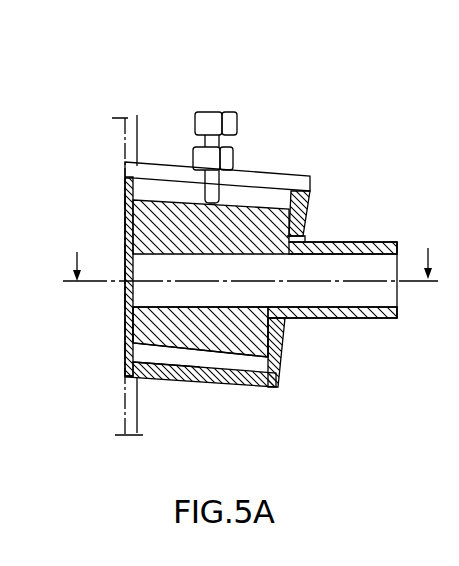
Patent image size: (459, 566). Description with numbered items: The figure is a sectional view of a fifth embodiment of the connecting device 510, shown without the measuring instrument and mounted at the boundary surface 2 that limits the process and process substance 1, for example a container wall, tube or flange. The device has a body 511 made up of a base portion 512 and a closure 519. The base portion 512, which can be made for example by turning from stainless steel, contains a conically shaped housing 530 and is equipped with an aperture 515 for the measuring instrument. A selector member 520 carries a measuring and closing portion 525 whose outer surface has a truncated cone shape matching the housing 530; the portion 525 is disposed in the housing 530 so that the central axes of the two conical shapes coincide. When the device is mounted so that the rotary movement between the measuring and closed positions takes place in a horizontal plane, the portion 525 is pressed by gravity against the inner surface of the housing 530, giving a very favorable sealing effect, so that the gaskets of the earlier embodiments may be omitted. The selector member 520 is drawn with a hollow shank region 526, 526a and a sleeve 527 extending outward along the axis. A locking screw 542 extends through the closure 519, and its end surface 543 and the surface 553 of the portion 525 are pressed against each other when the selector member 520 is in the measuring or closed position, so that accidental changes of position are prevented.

The coupling assembly 510 is at (367, 66).
The boundary surface 2 is at (125, 150).
The process and process substance 1 is at (67, 192).
The body 511 is at (171, 152).
The aperture 515 is at (125, 296).
The closure 519 is at (261, 180).
The base portion 512 is at (235, 387).
The housing 530 is at (182, 386).
The selector member 520 is at (303, 192).
The sleeve wall 526a is at (318, 246).
The sleeve 527 is at (325, 319).
The hub body 526 is at (170, 312).
The surface 553 is at (269, 232).
The measuring and closing portion 525 is at (277, 357).
The locking screw 542 is at (222, 141).
The end surface 543 is at (221, 203).